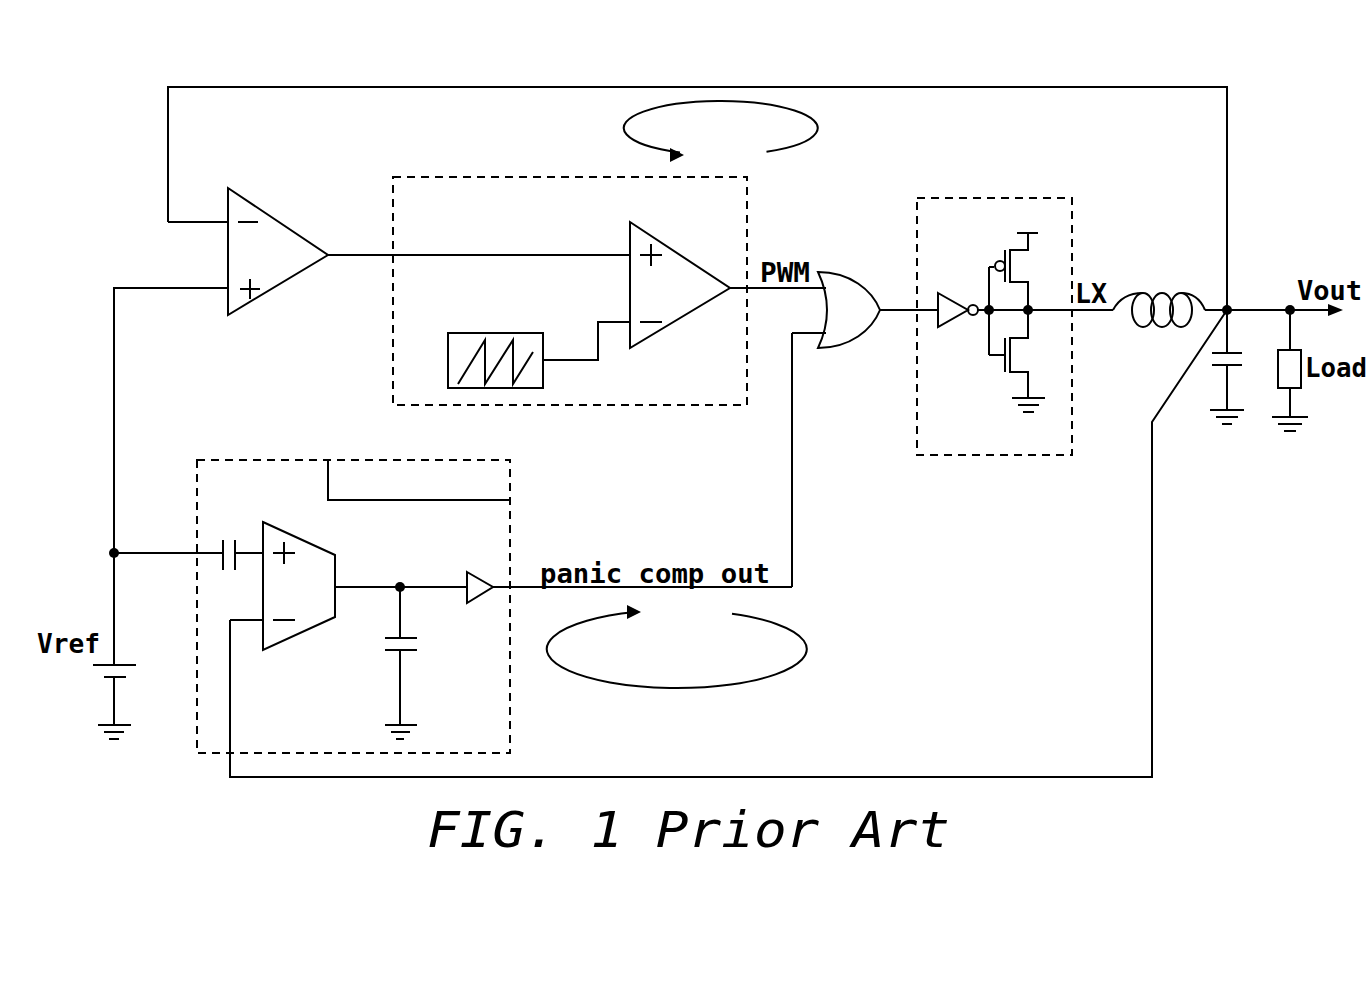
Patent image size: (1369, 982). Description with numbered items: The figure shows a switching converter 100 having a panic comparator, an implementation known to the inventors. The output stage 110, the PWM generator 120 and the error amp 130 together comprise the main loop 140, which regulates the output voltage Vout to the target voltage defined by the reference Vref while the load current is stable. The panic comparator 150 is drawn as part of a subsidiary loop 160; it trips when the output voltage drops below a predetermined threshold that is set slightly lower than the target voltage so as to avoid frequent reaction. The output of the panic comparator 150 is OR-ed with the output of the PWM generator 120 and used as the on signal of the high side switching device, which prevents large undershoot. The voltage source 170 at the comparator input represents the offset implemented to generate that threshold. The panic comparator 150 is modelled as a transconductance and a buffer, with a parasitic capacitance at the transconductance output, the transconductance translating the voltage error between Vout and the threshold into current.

The switching converter 100 is at (276, 46).
The output stage 110 is at (1072, 205).
The PWM generator 120 is at (482, 176).
The error amp 130 is at (257, 298).
The main loop 140 is at (625, 128).
The panic comparator 150 is at (422, 462).
The subsidiary loop 160 is at (813, 648).
The voltage source 170 is at (228, 536).